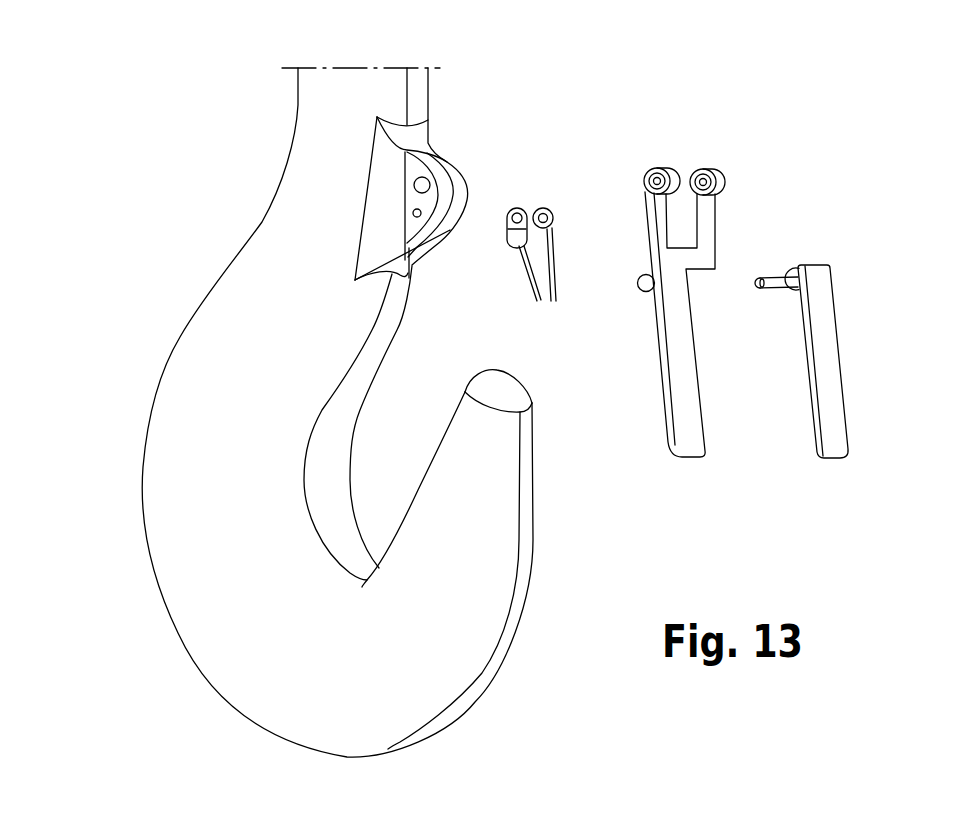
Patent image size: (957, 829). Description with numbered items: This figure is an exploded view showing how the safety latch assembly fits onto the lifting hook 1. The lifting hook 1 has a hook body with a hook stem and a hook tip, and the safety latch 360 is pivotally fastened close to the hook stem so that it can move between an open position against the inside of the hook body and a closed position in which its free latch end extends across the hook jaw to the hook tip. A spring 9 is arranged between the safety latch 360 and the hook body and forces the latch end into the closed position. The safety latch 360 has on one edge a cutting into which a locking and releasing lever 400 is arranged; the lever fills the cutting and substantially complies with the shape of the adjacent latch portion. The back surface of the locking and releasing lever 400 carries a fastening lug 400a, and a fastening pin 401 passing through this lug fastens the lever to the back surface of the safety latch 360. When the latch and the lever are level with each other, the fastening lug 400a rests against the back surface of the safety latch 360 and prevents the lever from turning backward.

The lifting hook 1 is at (243, 205).
The spring 9 is at (517, 204).
The safety latch 360 is at (640, 352).
The locking and releasing lever 400 is at (843, 393).
The fastening lug 400a is at (795, 263).
The fastening pin 401 is at (776, 288).